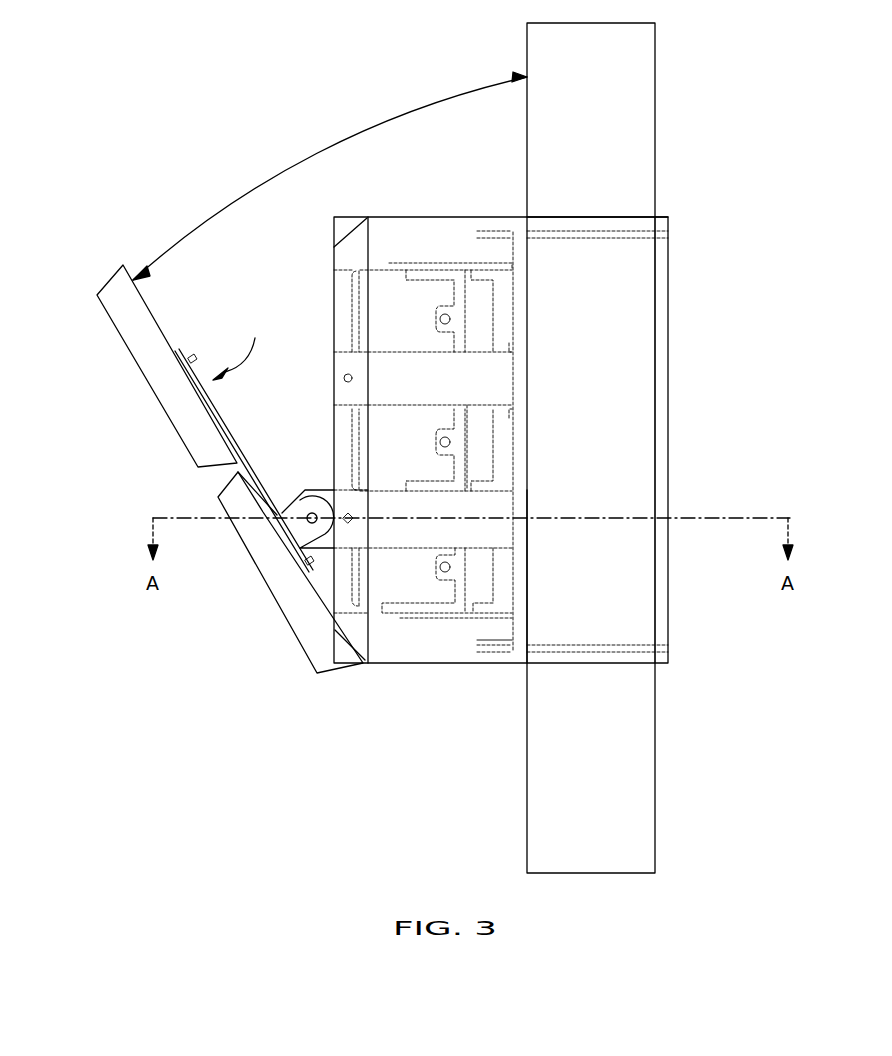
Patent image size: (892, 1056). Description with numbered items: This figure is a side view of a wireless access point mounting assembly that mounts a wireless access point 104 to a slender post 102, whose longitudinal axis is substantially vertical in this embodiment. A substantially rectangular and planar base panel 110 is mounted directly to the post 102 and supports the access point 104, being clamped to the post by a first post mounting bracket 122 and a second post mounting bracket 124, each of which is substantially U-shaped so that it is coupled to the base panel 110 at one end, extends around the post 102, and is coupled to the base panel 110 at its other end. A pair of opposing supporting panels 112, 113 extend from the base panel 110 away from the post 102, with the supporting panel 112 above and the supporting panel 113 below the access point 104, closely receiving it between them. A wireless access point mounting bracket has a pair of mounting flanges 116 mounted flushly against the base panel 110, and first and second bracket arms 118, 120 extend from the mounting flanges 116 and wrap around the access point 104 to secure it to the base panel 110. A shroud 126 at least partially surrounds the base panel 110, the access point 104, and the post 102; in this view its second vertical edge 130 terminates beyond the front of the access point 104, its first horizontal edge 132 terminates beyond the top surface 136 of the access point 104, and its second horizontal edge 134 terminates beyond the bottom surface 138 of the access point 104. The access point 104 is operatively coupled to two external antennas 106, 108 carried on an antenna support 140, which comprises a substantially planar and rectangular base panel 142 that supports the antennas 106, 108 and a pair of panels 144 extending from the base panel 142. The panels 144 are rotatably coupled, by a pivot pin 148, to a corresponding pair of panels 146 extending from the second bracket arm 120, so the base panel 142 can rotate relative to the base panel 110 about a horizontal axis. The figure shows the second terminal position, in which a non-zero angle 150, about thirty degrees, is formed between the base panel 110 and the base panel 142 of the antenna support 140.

The post 102 is at (643, 68).
The wireless access point 104 is at (450, 440).
The external antenna 106 is at (140, 343).
The external antenna 108 is at (293, 613).
The base panel 110 is at (520, 602).
The supporting panel 112 is at (485, 268).
The supporting panel 113 is at (443, 618).
The mounting flanges 116 is at (512, 442).
The first bracket arm 118 is at (485, 382).
The second bracket arm 120 is at (458, 506).
The first post mounting bracket 122 is at (642, 233).
The second post mounting bracket 124 is at (530, 647).
The shroud 126 is at (642, 507).
The second vertical edge 130 is at (335, 295).
The first horizontal edge 132 is at (641, 217).
The second horizontal edge 134 is at (487, 663).
The top surface 136 is at (430, 273).
The bottom surface 138 is at (343, 253).
The antenna support 140 is at (236, 346).
The base panel 142 is at (217, 417).
The panels 144 is at (275, 512).
The panels 146 is at (325, 495).
The pivot pin 148 is at (305, 522).
The angle 150 is at (280, 175).